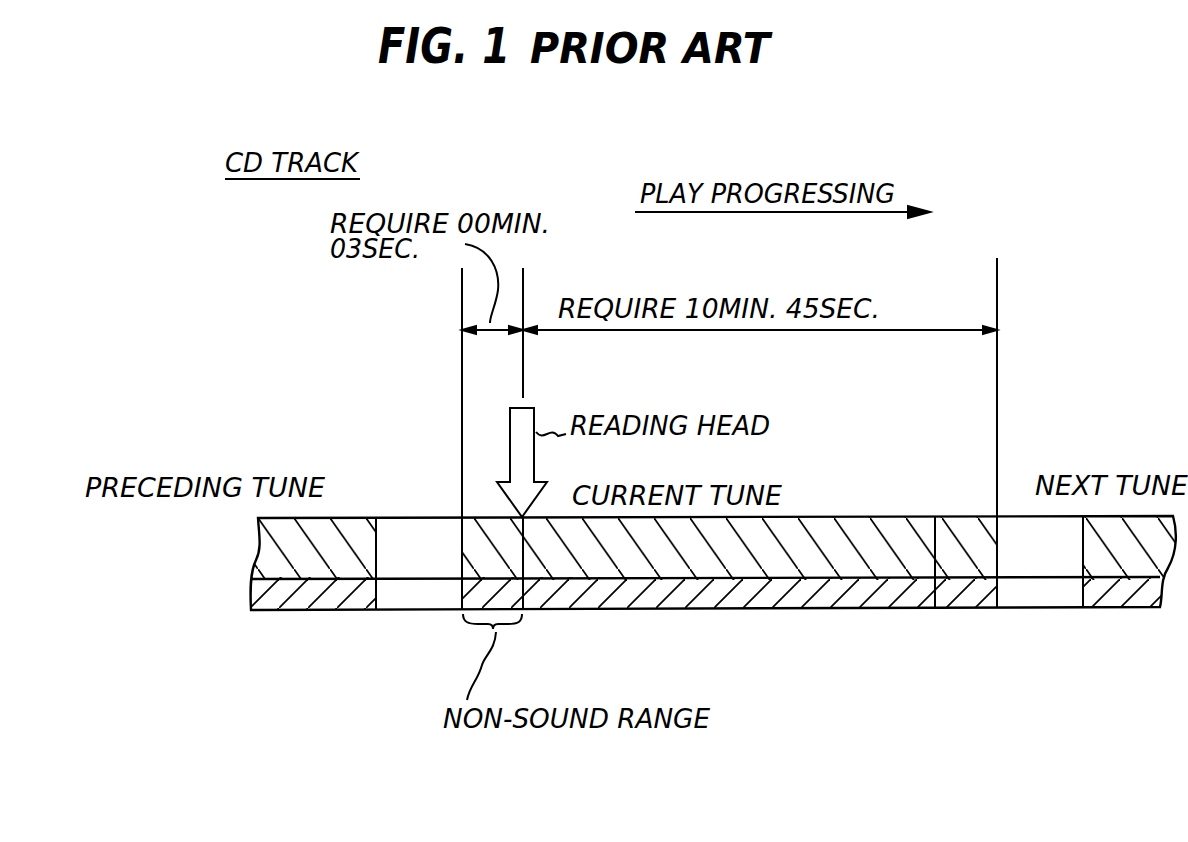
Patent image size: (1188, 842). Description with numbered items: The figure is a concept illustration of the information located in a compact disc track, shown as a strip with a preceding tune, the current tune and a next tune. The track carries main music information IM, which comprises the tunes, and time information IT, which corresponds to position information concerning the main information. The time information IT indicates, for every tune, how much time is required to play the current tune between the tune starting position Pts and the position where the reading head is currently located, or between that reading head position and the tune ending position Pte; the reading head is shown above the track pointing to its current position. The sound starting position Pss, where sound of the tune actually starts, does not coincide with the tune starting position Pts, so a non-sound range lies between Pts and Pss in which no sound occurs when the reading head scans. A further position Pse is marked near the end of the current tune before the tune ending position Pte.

The tune starting position Pts is at (462, 614).
The sound starting position Pss is at (528, 614).
The time information IT is at (712, 602).
The main music information IM is at (866, 565).
The sound end position Pse is at (936, 612).
The tune ending position Pte is at (1000, 610).